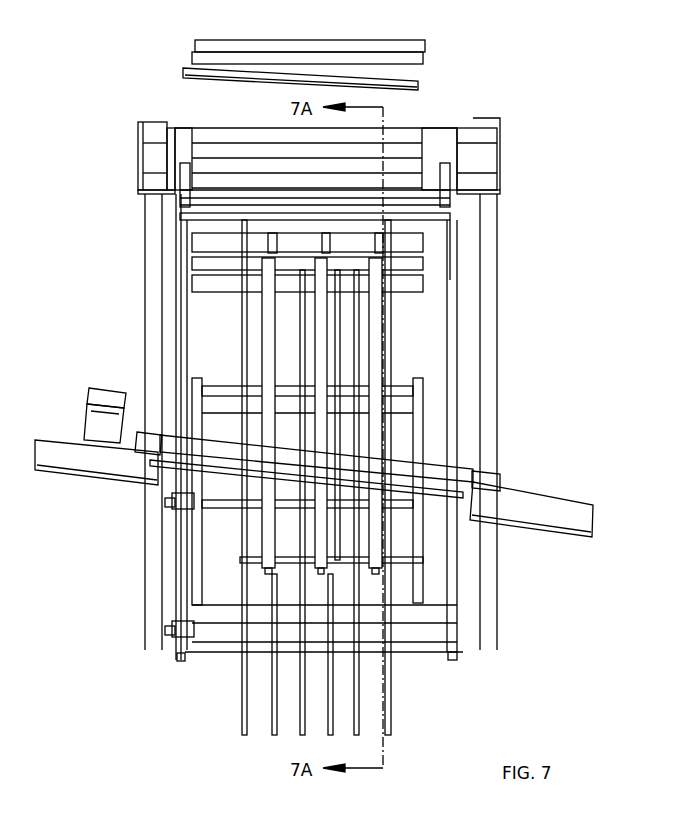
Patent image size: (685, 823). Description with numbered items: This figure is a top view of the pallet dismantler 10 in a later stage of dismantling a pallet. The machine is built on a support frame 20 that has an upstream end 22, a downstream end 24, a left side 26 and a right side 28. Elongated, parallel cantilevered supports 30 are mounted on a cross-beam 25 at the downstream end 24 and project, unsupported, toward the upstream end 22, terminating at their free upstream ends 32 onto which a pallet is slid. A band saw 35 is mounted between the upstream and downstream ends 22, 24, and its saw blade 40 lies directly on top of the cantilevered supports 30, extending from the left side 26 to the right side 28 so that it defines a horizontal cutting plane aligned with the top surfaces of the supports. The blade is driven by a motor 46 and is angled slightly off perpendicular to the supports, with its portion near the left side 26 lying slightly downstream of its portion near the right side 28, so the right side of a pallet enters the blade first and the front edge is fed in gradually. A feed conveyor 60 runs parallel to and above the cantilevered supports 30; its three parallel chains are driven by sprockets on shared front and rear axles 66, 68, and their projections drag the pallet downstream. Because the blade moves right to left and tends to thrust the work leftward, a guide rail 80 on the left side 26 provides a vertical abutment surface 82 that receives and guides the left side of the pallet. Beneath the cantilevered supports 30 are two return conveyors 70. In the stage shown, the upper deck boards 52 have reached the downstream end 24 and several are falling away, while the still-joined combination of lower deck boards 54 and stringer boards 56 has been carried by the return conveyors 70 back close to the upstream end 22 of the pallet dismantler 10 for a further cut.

The pallet dismantler 10 is at (519, 135).
The support frame 20 is at (505, 445).
The upstream end 22 is at (405, 652).
The downstream end 24 is at (190, 128).
The cross-beam 25 is at (485, 118).
The left side 26 is at (143, 299).
The right side 28 is at (497, 307).
The cantilevered supports 30 is at (358, 707).
The upstream end of cantilevered support 32 is at (275, 735).
The band saw 35 is at (600, 484).
The saw blade 40 is at (437, 502).
The motor 46 is at (96, 390).
The upper deck boards 52 is at (425, 42).
The lower deck boards 54 is at (405, 378).
The stringer boards 56 is at (423, 417).
The feed conveyor 60 is at (258, 328).
The front axle 66 is at (420, 560).
The rear axle 68 is at (422, 252).
The return conveyors 70 is at (460, 620).
The guide rail 80 is at (193, 678).
The vertical abutment surface 82 is at (192, 665).